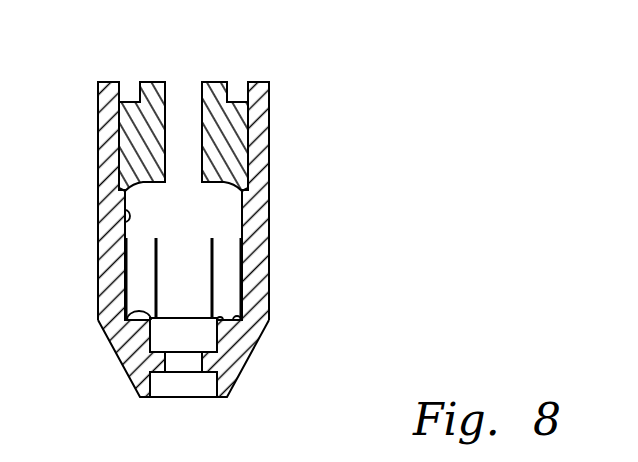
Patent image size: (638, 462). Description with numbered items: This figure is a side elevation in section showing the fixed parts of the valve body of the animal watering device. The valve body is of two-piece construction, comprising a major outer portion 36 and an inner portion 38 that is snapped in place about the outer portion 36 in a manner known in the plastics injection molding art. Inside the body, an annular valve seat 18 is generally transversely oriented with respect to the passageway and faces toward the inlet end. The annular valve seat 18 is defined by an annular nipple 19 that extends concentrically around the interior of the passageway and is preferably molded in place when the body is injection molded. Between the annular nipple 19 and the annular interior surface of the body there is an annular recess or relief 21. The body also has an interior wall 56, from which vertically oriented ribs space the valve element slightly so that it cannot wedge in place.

The annular valve seat 18 is at (232, 328).
The annular nipple 19 is at (128, 322).
The annular recess 21 is at (238, 317).
The outer portion 36 is at (258, 221).
The inner portion 38 is at (155, 81).
The interior wall 56 is at (127, 214).